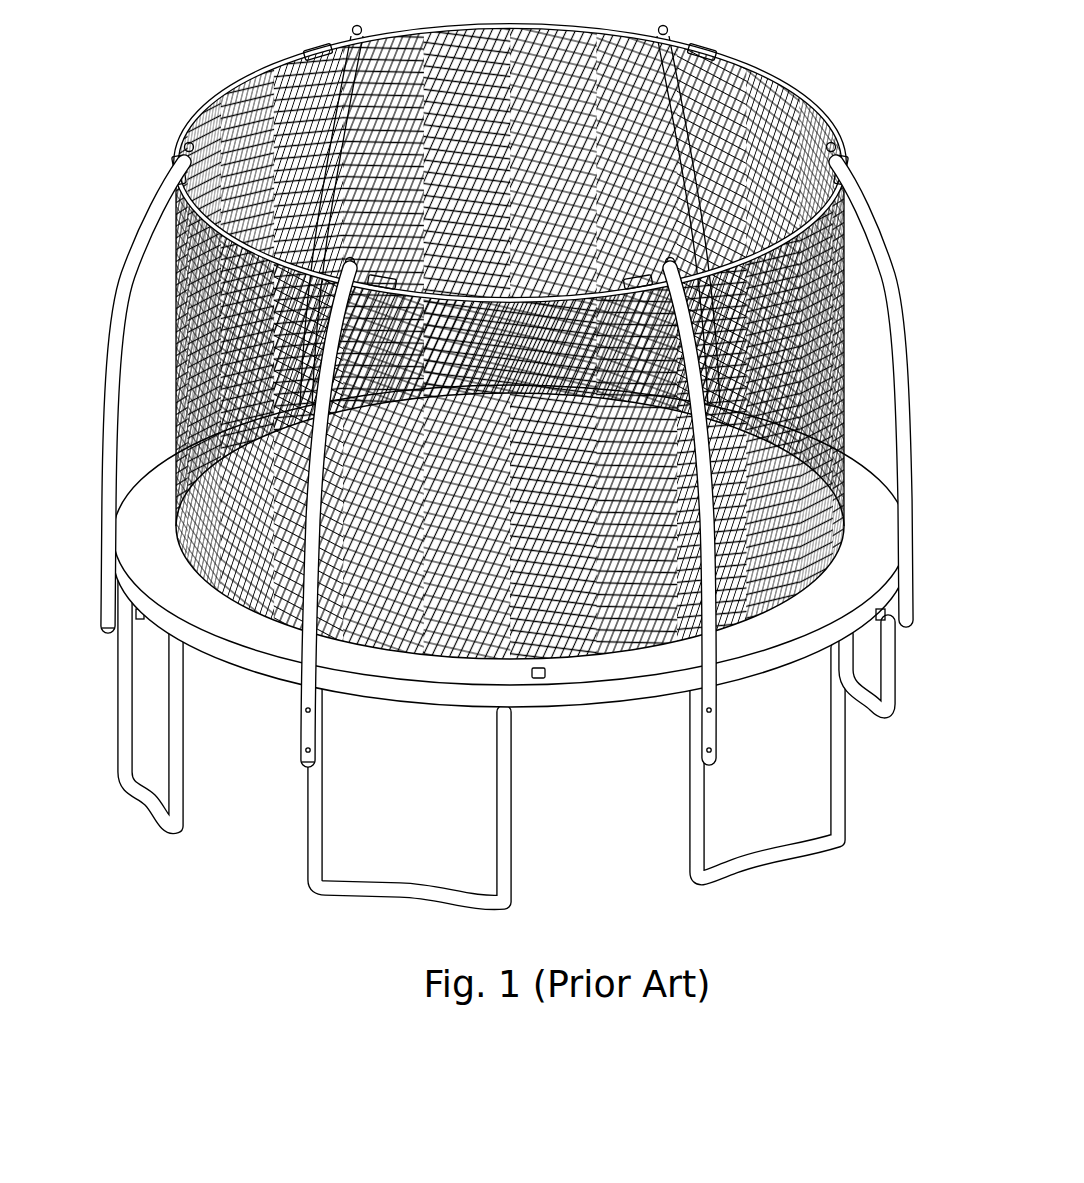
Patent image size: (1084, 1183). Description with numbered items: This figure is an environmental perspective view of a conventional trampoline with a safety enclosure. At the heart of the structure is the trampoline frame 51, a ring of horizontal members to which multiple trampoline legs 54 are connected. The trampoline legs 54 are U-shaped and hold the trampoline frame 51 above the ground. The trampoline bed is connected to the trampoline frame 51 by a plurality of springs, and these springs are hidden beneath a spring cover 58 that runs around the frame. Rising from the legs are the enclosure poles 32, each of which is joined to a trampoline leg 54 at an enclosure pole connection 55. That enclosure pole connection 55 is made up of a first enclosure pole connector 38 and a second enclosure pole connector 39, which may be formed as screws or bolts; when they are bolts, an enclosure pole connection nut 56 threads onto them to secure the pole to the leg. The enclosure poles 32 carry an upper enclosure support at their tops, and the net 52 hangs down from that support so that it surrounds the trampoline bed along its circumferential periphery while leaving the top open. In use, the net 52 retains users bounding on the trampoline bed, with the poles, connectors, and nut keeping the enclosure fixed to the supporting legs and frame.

The enclosure pole 32 is at (108, 427).
The first enclosure pole connector 38 is at (305, 712).
The second enclosure pole connector 39 is at (103, 616).
The trampoline frame 51 is at (414, 698).
The net 52 is at (223, 352).
The trampoline leg 54 is at (507, 845).
The enclosure pole connection 55 is at (703, 735).
The enclosure pole connection nut 56 is at (868, 623).
The spring cover 58 is at (538, 680).